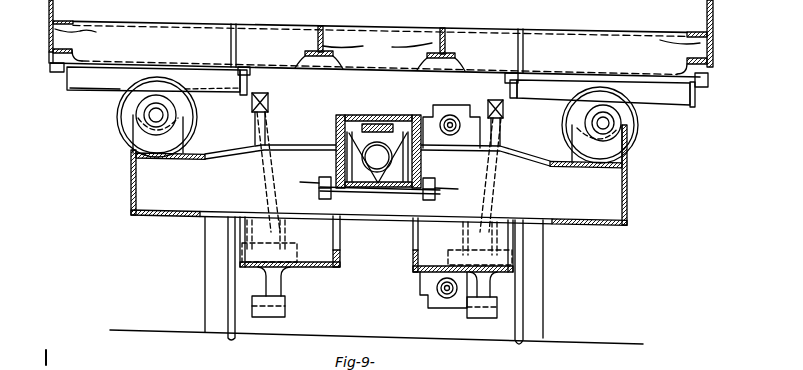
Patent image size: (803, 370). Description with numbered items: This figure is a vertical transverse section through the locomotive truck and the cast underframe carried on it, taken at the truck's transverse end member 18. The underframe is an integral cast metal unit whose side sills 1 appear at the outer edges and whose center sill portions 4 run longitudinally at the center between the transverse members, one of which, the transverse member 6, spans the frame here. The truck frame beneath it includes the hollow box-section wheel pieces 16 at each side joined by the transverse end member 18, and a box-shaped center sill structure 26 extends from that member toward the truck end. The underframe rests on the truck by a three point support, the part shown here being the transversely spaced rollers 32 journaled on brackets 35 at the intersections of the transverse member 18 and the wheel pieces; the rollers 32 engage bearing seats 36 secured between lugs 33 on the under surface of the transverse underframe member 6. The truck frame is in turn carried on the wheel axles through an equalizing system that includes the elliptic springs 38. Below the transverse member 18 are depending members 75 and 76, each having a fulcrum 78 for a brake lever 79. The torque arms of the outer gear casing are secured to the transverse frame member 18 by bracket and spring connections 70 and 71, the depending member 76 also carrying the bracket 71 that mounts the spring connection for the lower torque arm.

The side sill 1 is at (98, 31).
The center sill portion 4 is at (380, 48).
The transverse member 6 is at (534, 48).
The wheel piece 16 is at (131, 187).
The transverse end member 18 is at (379, 198).
The center sill structure 26 is at (345, 115).
The roller 32 is at (130, 104).
The lug 33 is at (56, 71).
The bracket 35 is at (134, 134).
The bearing seat 36 is at (76, 90).
The elliptic spring 38 is at (356, 185).
The bracket and spring connection 70 is at (437, 108).
The bracket and spring connection 71 is at (428, 305).
The depending member 75 is at (312, 268).
The depending member 76 is at (413, 263).
The fulcrum 78 is at (300, 228).
The brake lever 79 is at (267, 136).